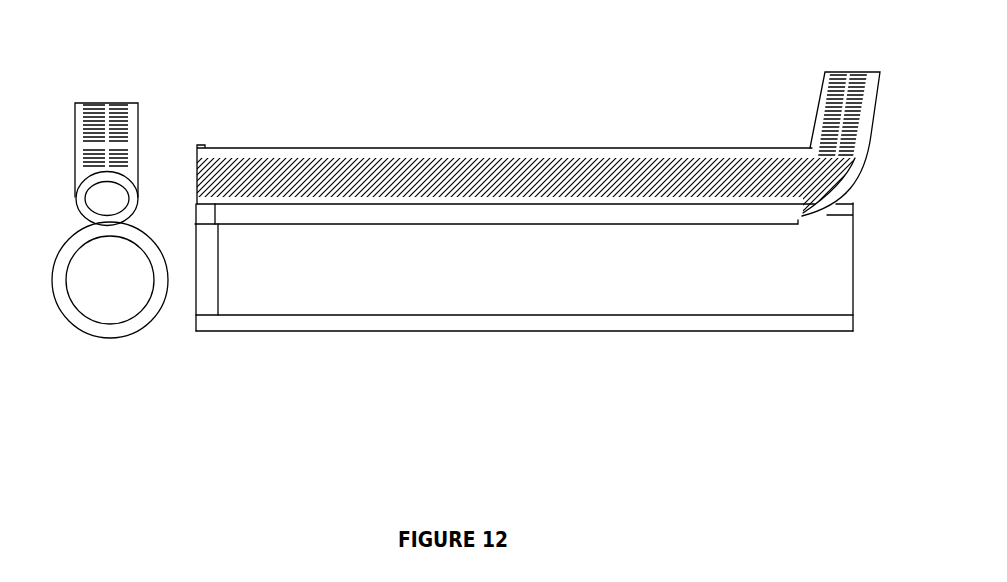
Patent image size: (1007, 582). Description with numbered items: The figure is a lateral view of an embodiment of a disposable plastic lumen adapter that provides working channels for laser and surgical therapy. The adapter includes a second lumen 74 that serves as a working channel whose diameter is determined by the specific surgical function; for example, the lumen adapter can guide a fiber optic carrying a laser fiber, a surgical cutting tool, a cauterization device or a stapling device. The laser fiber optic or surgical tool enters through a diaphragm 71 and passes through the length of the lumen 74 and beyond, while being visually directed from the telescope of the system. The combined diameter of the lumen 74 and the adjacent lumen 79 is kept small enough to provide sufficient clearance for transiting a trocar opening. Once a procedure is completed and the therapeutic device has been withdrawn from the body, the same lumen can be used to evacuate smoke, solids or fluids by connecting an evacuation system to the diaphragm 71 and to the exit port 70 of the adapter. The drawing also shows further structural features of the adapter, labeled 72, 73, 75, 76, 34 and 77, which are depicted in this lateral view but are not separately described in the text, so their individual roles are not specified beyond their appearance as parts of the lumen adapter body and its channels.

The exit port 70 is at (108, 115).
The diaphragm 71 is at (117, 140).
The bore 72 is at (110, 197).
The tube 73 is at (137, 195).
The second lumen 74 is at (505, 148).
The outer ring 75 is at (98, 337).
The inner ring 76 is at (138, 308).
The inner wall 34 is at (220, 297).
The lumen 79 is at (405, 333).
The housing 77 is at (852, 330).